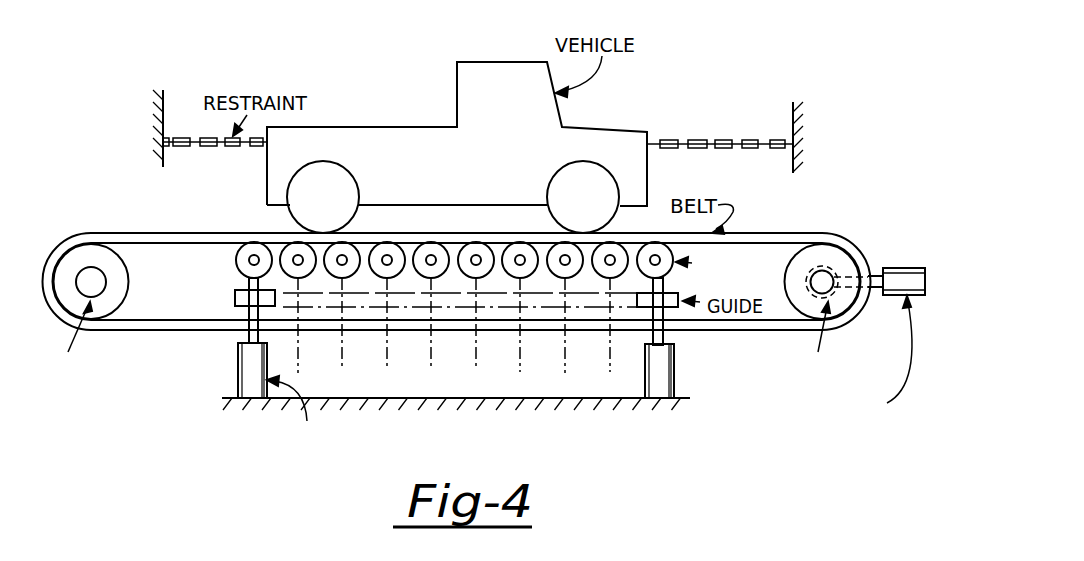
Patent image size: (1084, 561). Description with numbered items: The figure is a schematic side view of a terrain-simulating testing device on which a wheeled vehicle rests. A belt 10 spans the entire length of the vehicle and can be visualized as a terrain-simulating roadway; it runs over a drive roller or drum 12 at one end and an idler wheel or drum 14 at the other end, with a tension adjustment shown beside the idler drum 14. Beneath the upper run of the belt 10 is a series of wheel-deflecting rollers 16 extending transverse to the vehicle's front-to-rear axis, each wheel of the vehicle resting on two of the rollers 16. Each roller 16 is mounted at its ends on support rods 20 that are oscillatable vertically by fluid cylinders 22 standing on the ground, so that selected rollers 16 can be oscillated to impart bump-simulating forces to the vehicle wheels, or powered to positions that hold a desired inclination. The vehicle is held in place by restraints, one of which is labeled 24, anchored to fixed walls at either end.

The belt 10 is at (208, 199).
The drive roller or drum 12 is at (131, 297).
The idler wheel or drum 14 is at (833, 255).
The wheel-deflecting roller 16 is at (236, 269).
The support rod 20 is at (386, 345).
The fluid cylinder 22 is at (238, 368).
The restraint chain 24 is at (737, 102).